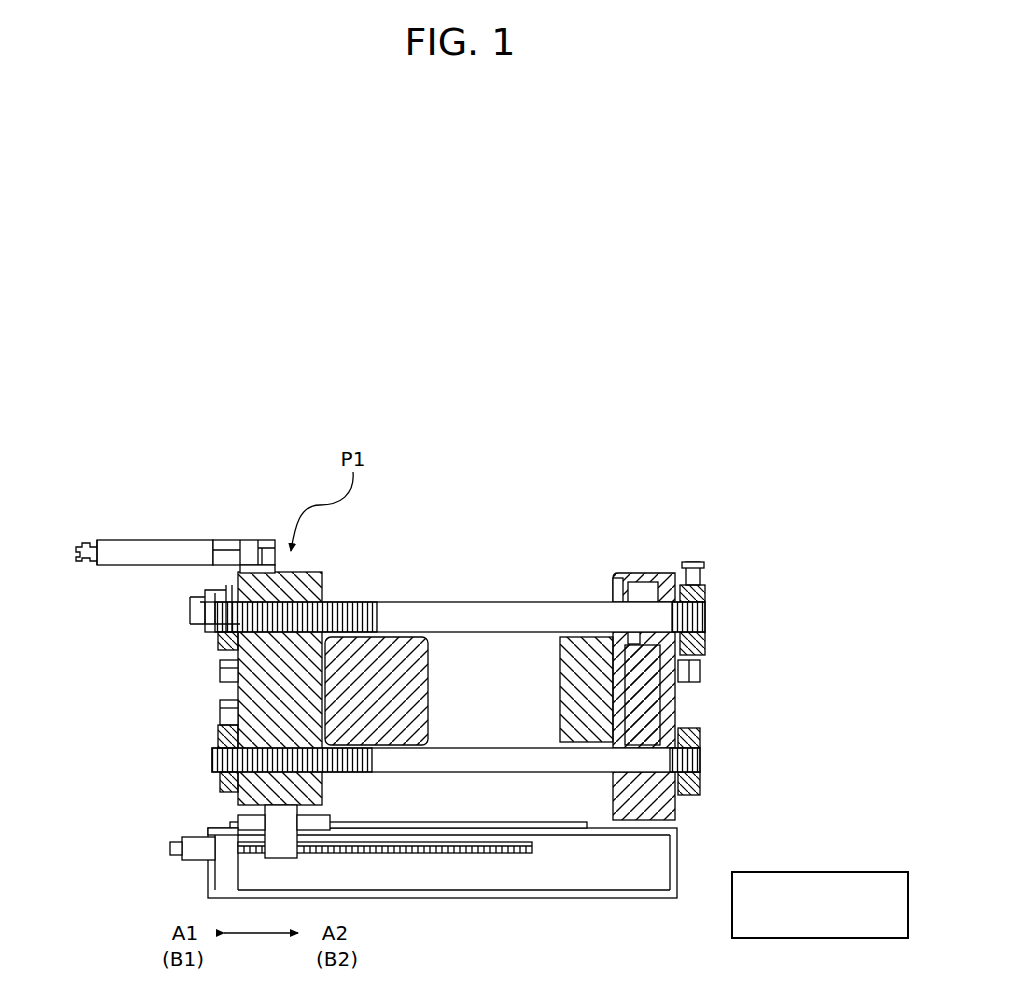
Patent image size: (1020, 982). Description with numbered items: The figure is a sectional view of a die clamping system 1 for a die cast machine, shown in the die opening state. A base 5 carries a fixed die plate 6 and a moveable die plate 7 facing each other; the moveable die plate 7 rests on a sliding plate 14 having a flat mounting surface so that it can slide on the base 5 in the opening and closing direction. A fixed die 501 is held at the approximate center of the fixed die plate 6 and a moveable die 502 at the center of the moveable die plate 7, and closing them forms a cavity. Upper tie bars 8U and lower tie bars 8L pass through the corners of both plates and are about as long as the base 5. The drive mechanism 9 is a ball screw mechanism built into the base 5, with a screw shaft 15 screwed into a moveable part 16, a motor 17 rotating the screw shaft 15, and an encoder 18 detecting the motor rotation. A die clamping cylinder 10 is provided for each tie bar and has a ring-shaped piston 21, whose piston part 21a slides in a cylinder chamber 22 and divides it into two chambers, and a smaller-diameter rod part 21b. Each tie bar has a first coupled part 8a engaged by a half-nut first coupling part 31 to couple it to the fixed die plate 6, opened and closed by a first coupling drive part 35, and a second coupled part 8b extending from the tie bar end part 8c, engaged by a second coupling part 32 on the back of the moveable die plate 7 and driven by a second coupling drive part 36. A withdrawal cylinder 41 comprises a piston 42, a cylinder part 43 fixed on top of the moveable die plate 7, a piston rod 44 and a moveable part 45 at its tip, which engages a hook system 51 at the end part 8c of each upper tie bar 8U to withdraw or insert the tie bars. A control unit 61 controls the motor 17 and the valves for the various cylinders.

The die clamping system 1 is at (852, 470).
The base 5 is at (598, 870).
The fixed die plate 6 is at (637, 580).
The moveable die plate 7 is at (300, 573).
The first coupled part 8a is at (705, 615).
The second coupled part 8b is at (212, 760).
The end part of tie bar 8c is at (218, 640).
The upper tie bar 8U is at (705, 640).
The lower tie bar 8L is at (700, 765).
The drive mechanism 9 is at (397, 858).
The die clamping cylinder 10 is at (613, 600).
The sliding plate 14 is at (478, 846).
The screw shaft 15 is at (425, 850).
The moveable part 16 is at (280, 848).
The motor 17 is at (198, 848).
The encoder 18 is at (205, 836).
The ring-shaped piston 21 is at (648, 590).
The piston part 21a is at (665, 712).
The rod part 21b is at (700, 738).
The cylinder chamber 22 is at (675, 688).
The first coupling part 31 is at (705, 595).
The second coupling part 32 is at (218, 735).
The first coupling drive part 35 is at (702, 568).
The second coupling drive part 36 is at (220, 712).
The withdrawal cylinder 41 is at (143, 550).
The piston 42 is at (247, 545).
The cylinder part 43 is at (182, 550).
The piston rod 44 is at (98, 545).
The moveable part 45 is at (80, 547).
The hook system 51 is at (188, 605).
The control unit 61 is at (810, 872).
The fixed die 501 is at (580, 660).
The moveable die 502 is at (400, 657).